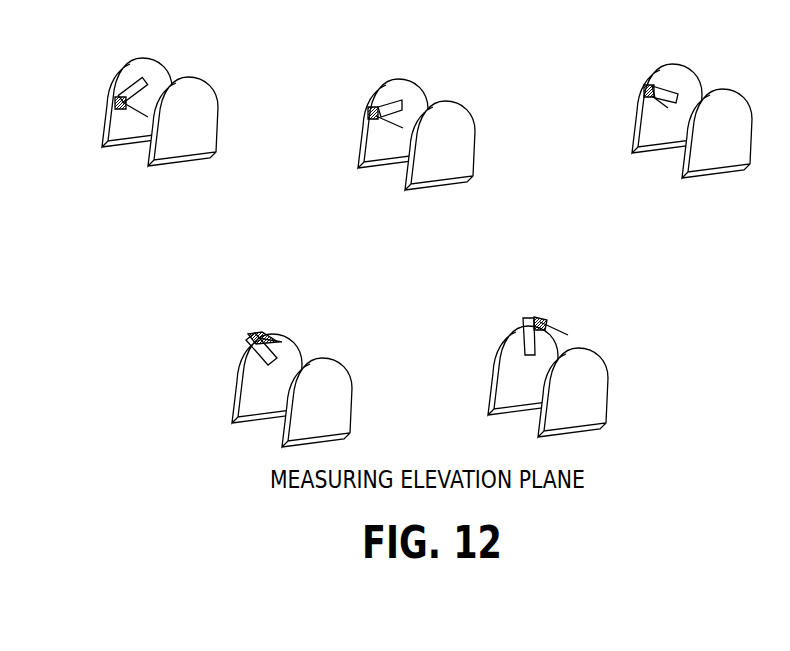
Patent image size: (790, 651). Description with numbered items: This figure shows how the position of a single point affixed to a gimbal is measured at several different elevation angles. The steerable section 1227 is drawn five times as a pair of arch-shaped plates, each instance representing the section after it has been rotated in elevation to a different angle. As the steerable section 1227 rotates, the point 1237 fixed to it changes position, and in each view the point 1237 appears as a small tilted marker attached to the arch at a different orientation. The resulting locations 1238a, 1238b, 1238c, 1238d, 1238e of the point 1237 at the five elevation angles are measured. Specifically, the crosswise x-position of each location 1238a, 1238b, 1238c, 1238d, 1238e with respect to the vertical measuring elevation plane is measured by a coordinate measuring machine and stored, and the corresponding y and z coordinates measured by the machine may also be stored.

The steerable section 1227 is at (168, 130).
The point 1237 is at (117, 100).
The location of point at a first elevation angle 1238a is at (140, 112).
The location of point at a second elevation angle 1238b is at (392, 123).
The location of point at a third elevation angle 1238c is at (665, 108).
The location of point at a fourth elevation angle 1238d is at (282, 342).
The location of point at a fifth elevation angle 1238e is at (545, 320).